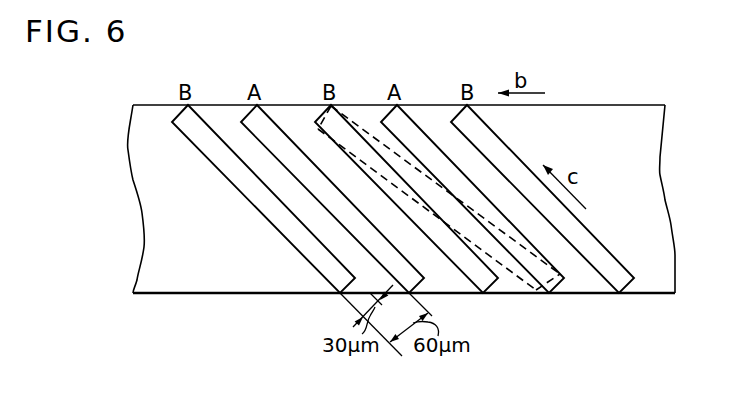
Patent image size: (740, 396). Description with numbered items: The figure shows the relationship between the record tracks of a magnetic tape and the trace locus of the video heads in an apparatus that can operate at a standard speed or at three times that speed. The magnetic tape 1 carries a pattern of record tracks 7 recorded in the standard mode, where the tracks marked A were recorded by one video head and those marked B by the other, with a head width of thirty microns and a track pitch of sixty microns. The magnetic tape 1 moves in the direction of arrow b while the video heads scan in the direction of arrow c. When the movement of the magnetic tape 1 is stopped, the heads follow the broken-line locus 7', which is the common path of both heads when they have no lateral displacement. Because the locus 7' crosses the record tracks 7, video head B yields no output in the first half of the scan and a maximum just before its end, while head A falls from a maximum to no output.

The magnetic tape 1 is at (595, 105).
The record tracks 7 is at (392, 194).
The trace locus of the video heads 7' is at (439, 221).